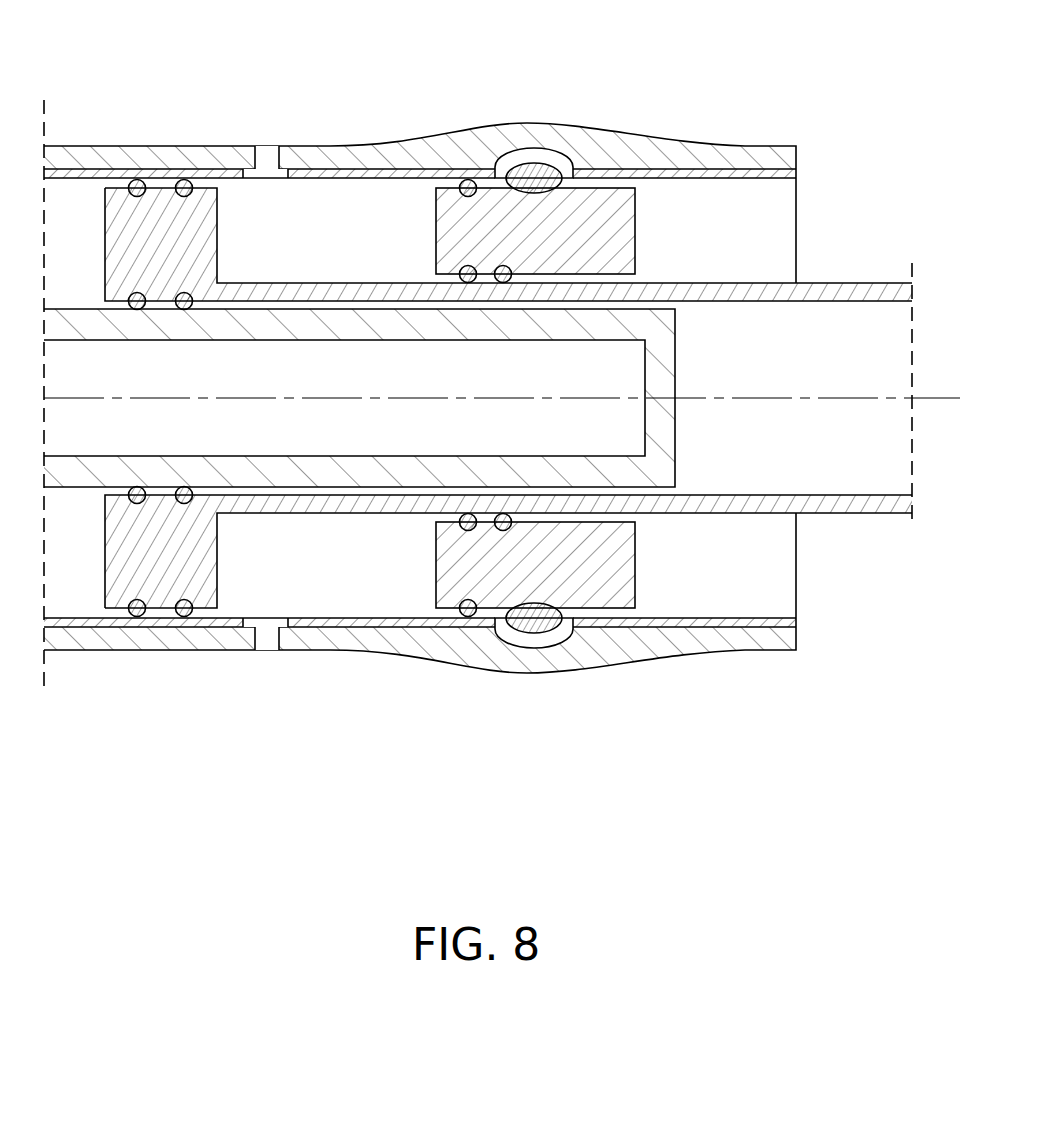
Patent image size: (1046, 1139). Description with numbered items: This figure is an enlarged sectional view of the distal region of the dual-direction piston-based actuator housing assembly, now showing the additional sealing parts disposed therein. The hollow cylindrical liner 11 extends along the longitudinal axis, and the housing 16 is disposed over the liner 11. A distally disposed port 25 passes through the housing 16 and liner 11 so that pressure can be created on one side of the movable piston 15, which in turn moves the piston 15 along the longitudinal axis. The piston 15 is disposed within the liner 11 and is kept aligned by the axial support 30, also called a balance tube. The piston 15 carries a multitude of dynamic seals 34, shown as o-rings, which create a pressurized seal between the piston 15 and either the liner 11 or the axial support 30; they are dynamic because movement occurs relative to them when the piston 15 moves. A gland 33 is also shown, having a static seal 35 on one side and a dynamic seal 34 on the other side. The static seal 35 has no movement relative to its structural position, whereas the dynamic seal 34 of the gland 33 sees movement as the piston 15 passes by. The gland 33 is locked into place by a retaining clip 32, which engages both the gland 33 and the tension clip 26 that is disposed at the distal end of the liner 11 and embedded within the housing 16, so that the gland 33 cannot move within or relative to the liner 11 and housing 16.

The hollow cylindrical liner 11 is at (773, 180).
The movable piston 15 is at (122, 225).
The housing 16 is at (448, 128).
The distally disposed port 25 is at (265, 146).
The tension clip 26 is at (540, 150).
The axial support 30 is at (665, 453).
The retaining clip 32 is at (538, 175).
The gland 33 is at (600, 225).
The dynamic seals 34 is at (183, 183).
The static seal 35 is at (470, 612).